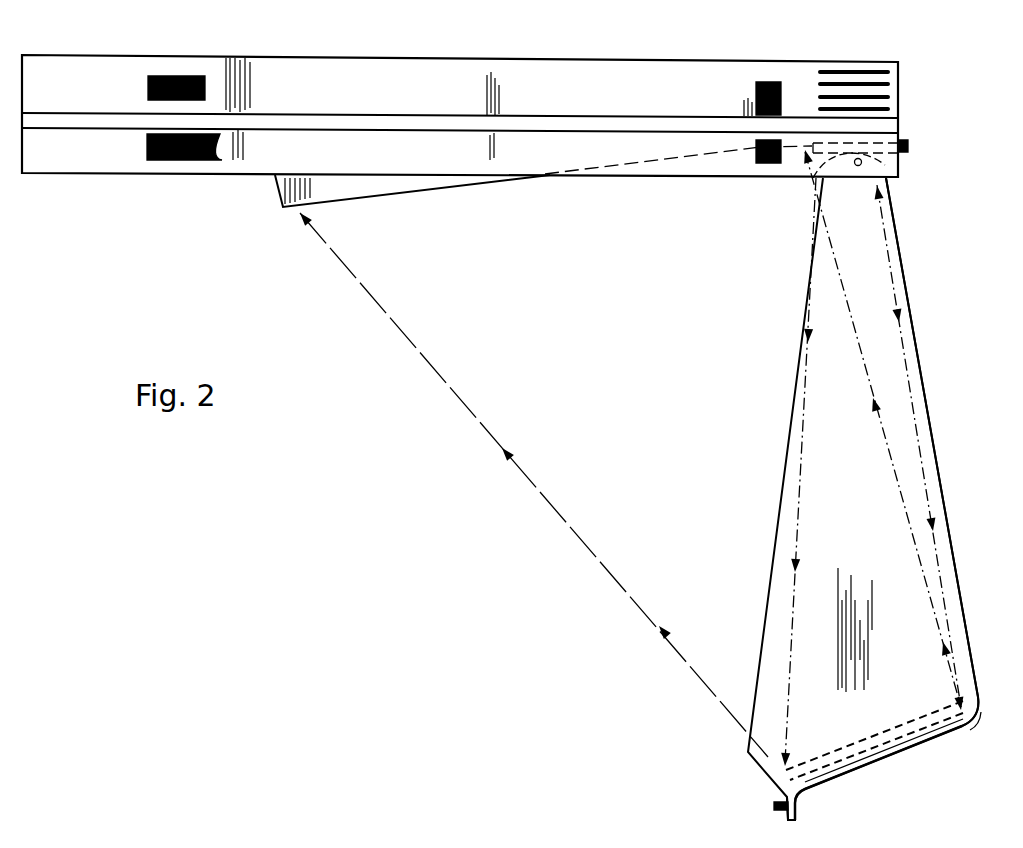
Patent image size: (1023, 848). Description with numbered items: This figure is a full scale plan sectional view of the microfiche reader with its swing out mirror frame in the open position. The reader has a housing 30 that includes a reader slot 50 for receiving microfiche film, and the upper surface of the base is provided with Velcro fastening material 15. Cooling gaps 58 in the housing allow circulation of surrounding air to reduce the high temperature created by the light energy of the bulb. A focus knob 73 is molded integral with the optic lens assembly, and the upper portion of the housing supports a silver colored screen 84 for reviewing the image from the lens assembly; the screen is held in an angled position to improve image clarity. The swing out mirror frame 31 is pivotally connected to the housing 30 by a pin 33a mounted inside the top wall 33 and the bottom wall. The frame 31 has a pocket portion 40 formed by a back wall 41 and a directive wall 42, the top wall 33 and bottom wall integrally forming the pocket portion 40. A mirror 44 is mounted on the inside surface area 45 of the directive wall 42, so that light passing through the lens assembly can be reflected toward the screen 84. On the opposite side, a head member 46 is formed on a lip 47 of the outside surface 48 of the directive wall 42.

The housing 30 is at (597, 57).
The cooling gaps 58 is at (861, 71).
The reader slot 50 is at (893, 127).
The Velcro fastening material 15 is at (149, 96).
The screen 84 is at (470, 190).
The focus knob 73 is at (910, 147).
The pin 33a is at (866, 165).
The top wall 33 is at (853, 532).
The swing out mirror frame 31 is at (920, 360).
The pocket portion 40 is at (958, 711).
The back wall 41 is at (980, 706).
The directive wall 42 is at (866, 766).
The mirror 44 is at (860, 748).
The inside surface area 45 is at (818, 778).
The outside surface 48 is at (946, 735).
The head member 46 is at (774, 806).
The lip 47 is at (796, 815).